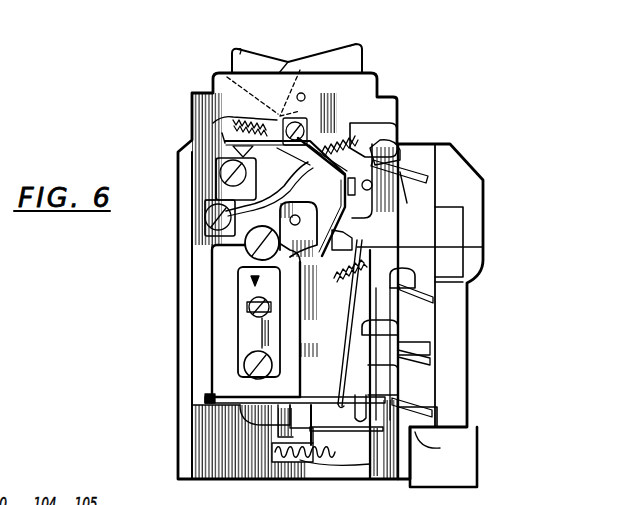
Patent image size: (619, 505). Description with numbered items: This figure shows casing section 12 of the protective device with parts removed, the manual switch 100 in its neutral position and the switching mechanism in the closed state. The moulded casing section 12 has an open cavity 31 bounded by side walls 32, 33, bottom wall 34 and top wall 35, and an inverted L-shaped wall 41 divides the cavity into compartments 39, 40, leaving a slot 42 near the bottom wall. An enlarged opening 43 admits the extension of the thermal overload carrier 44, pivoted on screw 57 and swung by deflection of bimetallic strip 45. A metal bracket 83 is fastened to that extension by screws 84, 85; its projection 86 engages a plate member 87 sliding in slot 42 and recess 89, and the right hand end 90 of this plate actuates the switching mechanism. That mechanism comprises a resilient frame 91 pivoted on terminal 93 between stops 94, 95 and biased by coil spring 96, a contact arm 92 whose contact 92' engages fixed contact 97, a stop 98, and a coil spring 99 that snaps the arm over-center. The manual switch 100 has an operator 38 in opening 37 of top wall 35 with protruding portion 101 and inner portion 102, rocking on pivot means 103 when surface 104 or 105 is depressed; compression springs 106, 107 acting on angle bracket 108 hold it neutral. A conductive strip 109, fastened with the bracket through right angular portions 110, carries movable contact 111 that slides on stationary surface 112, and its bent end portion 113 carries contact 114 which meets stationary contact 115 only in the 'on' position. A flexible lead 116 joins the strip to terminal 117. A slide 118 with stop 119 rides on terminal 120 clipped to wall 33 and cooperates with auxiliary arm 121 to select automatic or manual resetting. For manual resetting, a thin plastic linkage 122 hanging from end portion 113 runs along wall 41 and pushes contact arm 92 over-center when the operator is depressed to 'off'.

The casing section 12 is at (185, 378).
The cavity 31 is at (272, 179).
The side wall 32 is at (210, 277).
The side wall 33 is at (440, 236).
The bottom wall 34 is at (225, 450).
The top wall 35 is at (360, 105).
The opening 37 is at (279, 71).
The switch operator 38 is at (234, 52).
The compartment 39 is at (222, 299).
The compartment 40 is at (470, 280).
The inverted L-shaped wall 41 is at (225, 256).
The slot 42 is at (283, 463).
The enlarged opening 43 is at (200, 289).
The carrier 44 is at (277, 415).
The bimetallic strip 45 is at (240, 348).
The screw 57 is at (255, 243).
The metal bracket 83 is at (262, 331).
The screw 84 is at (250, 367).
The screw 85 is at (250, 310).
The projection 86 is at (240, 421).
The plate member 87 is at (240, 401).
The recess 89 is at (205, 400).
The right hand end 90 is at (343, 408).
The frame 91 is at (437, 327).
The contact arm 92 is at (431, 364).
The contact 92' is at (516, 292).
The terminal 93 is at (421, 434).
The stop 94 is at (353, 243).
The stop 95 is at (470, 248).
The coil spring 96 is at (302, 457).
The fixed contact 97 is at (437, 300).
The stop 98 is at (344, 370).
The coil spring 99 is at (364, 258).
The manual switch 100 is at (378, 53).
The portion 101 is at (232, 62).
The inner end portion 102 is at (232, 118).
The pivot means 103 is at (303, 92).
The operator surface 104 is at (239, 48).
The operator surface 105 is at (354, 49).
The compression spring 106 is at (230, 125).
The compression spring 107 is at (372, 130).
The angle bracket 108 is at (353, 152).
The contact strip 109 is at (216, 167).
The right angular portions 110 is at (312, 108).
The movable contact 111 is at (224, 145).
The stationary contact surface 112 is at (233, 152).
The end portion 113 is at (392, 221).
The movable contact 114 is at (397, 206).
The stationary contact 115 is at (372, 186).
The flexible lead 116 is at (216, 223).
The terminal 117 is at (205, 219).
The slide 118 is at (440, 343).
The stop 119 is at (437, 371).
The terminal 120 is at (435, 353).
The auxiliary arm 121 is at (435, 397).
The linkage 122 is at (338, 210).